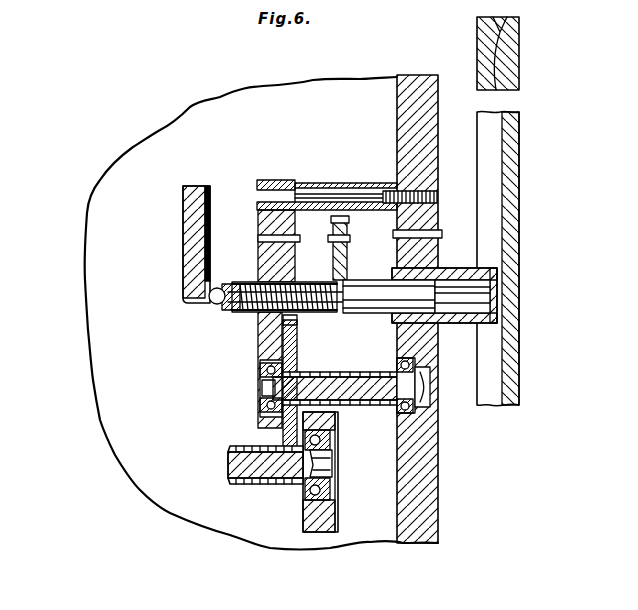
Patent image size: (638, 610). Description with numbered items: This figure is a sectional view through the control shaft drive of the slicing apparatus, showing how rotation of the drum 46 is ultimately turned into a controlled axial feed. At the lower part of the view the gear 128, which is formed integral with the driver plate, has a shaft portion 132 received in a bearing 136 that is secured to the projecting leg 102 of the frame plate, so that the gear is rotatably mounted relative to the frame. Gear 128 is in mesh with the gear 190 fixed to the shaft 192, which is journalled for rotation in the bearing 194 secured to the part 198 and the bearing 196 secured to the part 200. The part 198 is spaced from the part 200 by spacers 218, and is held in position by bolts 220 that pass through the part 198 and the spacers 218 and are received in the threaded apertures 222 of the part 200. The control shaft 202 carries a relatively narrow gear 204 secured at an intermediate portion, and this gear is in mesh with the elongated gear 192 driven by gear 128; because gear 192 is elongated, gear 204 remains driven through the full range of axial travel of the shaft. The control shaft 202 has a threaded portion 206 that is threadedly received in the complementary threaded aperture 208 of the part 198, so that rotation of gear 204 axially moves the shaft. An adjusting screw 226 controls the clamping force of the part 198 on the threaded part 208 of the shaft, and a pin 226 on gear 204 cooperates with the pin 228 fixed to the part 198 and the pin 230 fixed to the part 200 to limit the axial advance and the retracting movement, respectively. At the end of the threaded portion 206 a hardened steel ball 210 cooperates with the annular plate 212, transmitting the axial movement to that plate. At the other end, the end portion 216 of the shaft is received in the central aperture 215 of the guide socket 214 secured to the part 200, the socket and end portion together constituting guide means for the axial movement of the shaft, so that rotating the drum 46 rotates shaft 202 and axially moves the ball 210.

The drum 46 is at (518, 113).
The projecting leg 102 is at (313, 526).
The gear 128 is at (267, 470).
The shaft portion 132 is at (333, 467).
The bearing 136 is at (327, 433).
The gear 190 is at (283, 437).
The shaft 192 is at (382, 397).
The bearing 194 is at (258, 366).
The bearing 196 is at (417, 365).
The part 198 is at (267, 340).
The part 200 is at (428, 498).
The control shaft 202 is at (306, 325).
The gear 204 is at (320, 344).
The threaded portion 206 is at (245, 283).
The aperture 208 is at (282, 281).
The hardened steel ball 210 is at (212, 300).
The annular plate 212 is at (192, 252).
The guide socket 214 is at (452, 268).
The central aperture 215 is at (473, 267).
The end portion 216 is at (367, 293).
The spacers 218 is at (333, 183).
The bolts 220 is at (257, 195).
The apertures 222 is at (424, 180).
The pin 226 is at (360, 243).
The pin 228 is at (257, 239).
The pin 230 is at (447, 229).